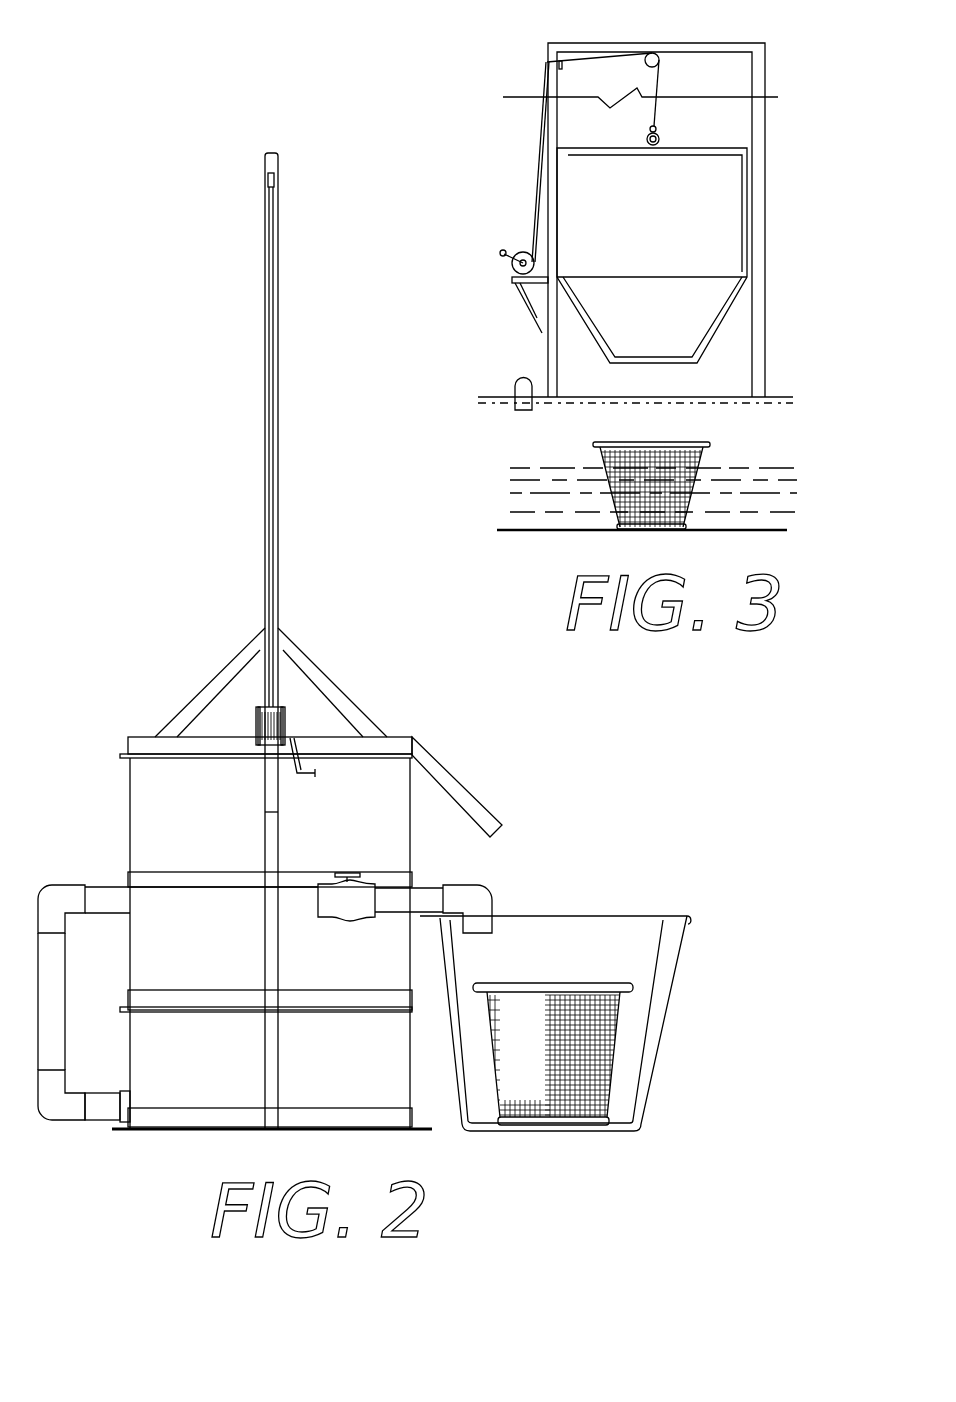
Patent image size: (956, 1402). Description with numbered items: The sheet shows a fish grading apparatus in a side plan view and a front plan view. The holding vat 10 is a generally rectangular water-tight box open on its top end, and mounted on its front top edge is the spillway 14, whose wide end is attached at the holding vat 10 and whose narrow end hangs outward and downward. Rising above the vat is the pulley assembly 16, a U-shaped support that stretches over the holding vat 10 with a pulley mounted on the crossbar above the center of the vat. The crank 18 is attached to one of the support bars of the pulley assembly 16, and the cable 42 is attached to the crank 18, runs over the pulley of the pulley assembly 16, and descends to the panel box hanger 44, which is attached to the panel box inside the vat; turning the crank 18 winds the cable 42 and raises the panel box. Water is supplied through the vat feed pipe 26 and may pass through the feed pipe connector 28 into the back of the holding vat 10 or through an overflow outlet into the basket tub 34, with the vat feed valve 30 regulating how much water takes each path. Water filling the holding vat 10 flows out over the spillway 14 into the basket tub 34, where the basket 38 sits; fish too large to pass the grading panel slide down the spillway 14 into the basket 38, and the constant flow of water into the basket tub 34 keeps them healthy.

In FIG. 2, the holding vat 10 is at (130, 798).
In FIG. 2, the spillway 14 is at (463, 783).
In FIG. 3, the spillway 14 is at (727, 318).
In FIG. 2, the pulley assembly 16 is at (278, 548).
In FIG. 3, the pulley assembly 16 is at (546, 54).
In FIG. 2, the crank 18 is at (283, 727).
In FIG. 3, the crank 18 is at (510, 272).
In FIG. 2, the vat feed pipe 26 is at (63, 987).
In FIG. 2, the feed pipe connector 28 is at (370, 890).
In FIG. 2, the vat feed valve 30 is at (73, 1120).
In FIG. 2, the basket tub 34 is at (658, 975).
In FIG. 3, the basket tub 34 is at (778, 397).
In FIG. 2, the basket 38 is at (603, 1070).
In FIG. 3, the basket 38 is at (707, 460).
In FIG. 2, the cable 42 is at (278, 323).
In FIG. 3, the cable 42 is at (534, 200).
In FIG. 3, the panel box hanger 44 is at (740, 150).